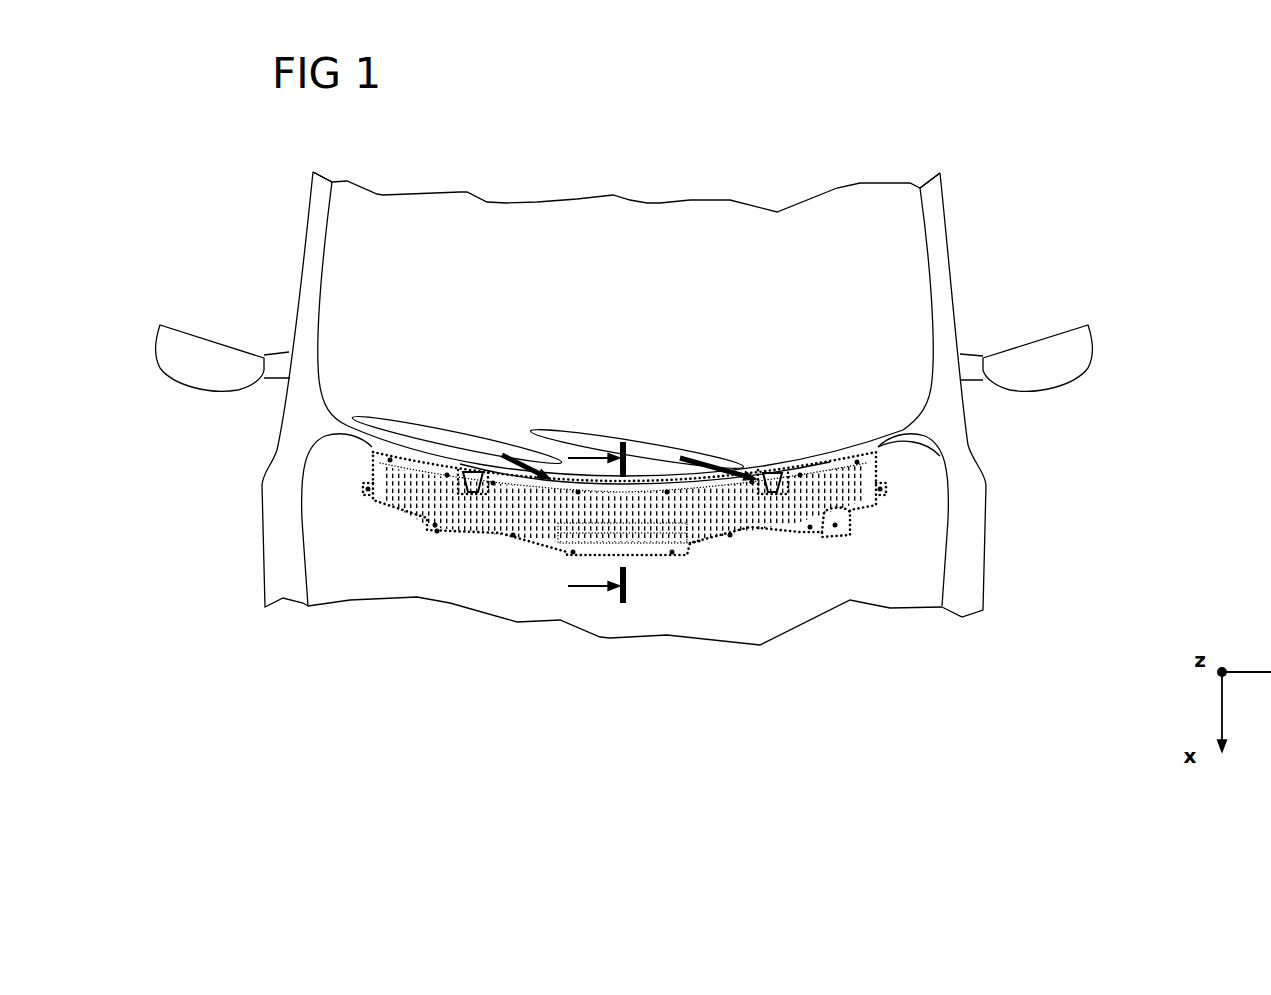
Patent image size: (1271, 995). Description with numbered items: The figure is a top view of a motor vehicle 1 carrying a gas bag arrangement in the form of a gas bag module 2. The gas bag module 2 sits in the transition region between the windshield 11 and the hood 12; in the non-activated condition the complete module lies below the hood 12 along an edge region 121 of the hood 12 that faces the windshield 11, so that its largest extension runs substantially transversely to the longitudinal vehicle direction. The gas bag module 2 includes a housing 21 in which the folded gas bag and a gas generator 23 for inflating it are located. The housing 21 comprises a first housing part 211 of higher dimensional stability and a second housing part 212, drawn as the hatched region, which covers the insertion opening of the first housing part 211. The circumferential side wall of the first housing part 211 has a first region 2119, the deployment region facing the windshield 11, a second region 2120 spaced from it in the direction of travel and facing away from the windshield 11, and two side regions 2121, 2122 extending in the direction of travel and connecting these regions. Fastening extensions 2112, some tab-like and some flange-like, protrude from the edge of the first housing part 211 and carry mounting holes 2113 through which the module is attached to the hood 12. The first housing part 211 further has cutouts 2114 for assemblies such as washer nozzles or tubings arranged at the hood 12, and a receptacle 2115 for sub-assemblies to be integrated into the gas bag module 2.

The motor vehicle 1 is at (984, 247).
The windshield 11 is at (863, 223).
The hood 12 is at (910, 590).
The edge region of the hood 121 is at (887, 443).
The gas bag module 2 is at (905, 503).
The housing 21 is at (413, 505).
The first housing part 211 is at (603, 548).
The second housing part 212 is at (383, 498).
The fastening extensions 2112 is at (427, 533).
The mounting holes 2113 is at (439, 535).
The cutouts 2114 is at (463, 470).
The receptacle 2115 is at (835, 538).
The first region 2119 is at (651, 497).
The second region 2120 is at (698, 547).
The side region 2121 is at (372, 488).
The side region 2122 is at (873, 472).
The gas generator 23 is at (656, 530).